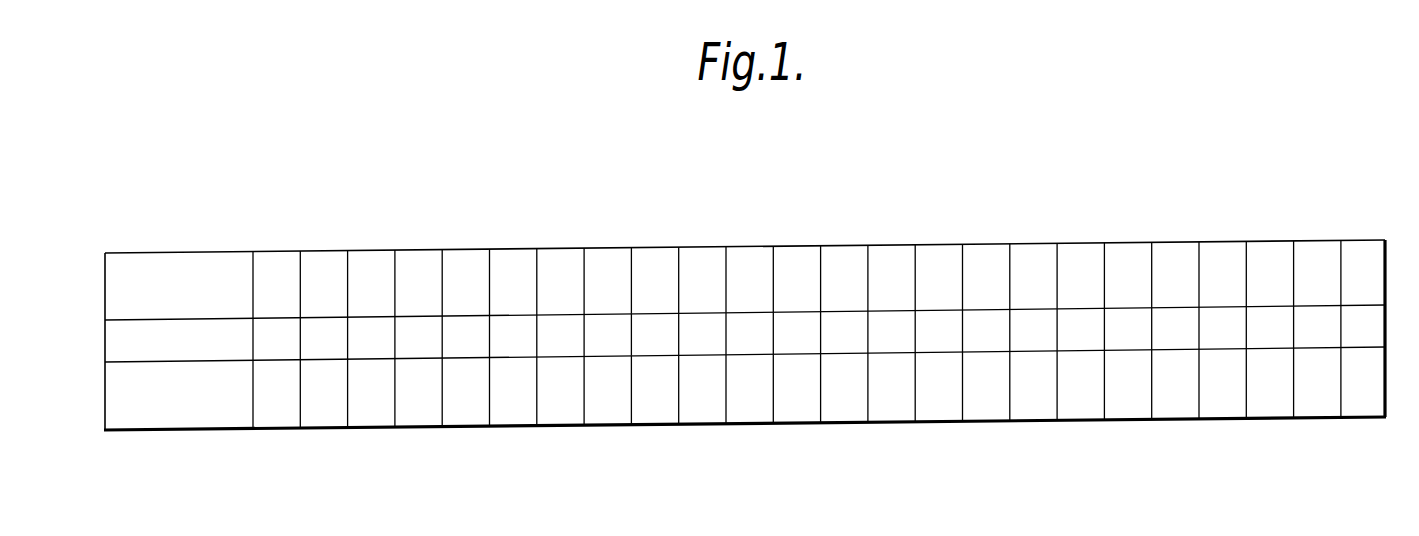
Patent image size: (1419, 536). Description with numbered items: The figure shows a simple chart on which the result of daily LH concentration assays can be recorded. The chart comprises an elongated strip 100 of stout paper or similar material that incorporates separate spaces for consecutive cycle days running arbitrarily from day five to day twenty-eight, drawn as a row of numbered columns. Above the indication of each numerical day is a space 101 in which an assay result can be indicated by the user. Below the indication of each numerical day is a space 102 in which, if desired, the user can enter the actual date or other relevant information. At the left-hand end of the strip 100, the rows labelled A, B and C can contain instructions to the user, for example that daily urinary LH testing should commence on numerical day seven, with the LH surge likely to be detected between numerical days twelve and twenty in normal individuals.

The elongated strip 100 is at (757, 324).
The space 101 is at (1221, 262).
The space 102 is at (932, 392).